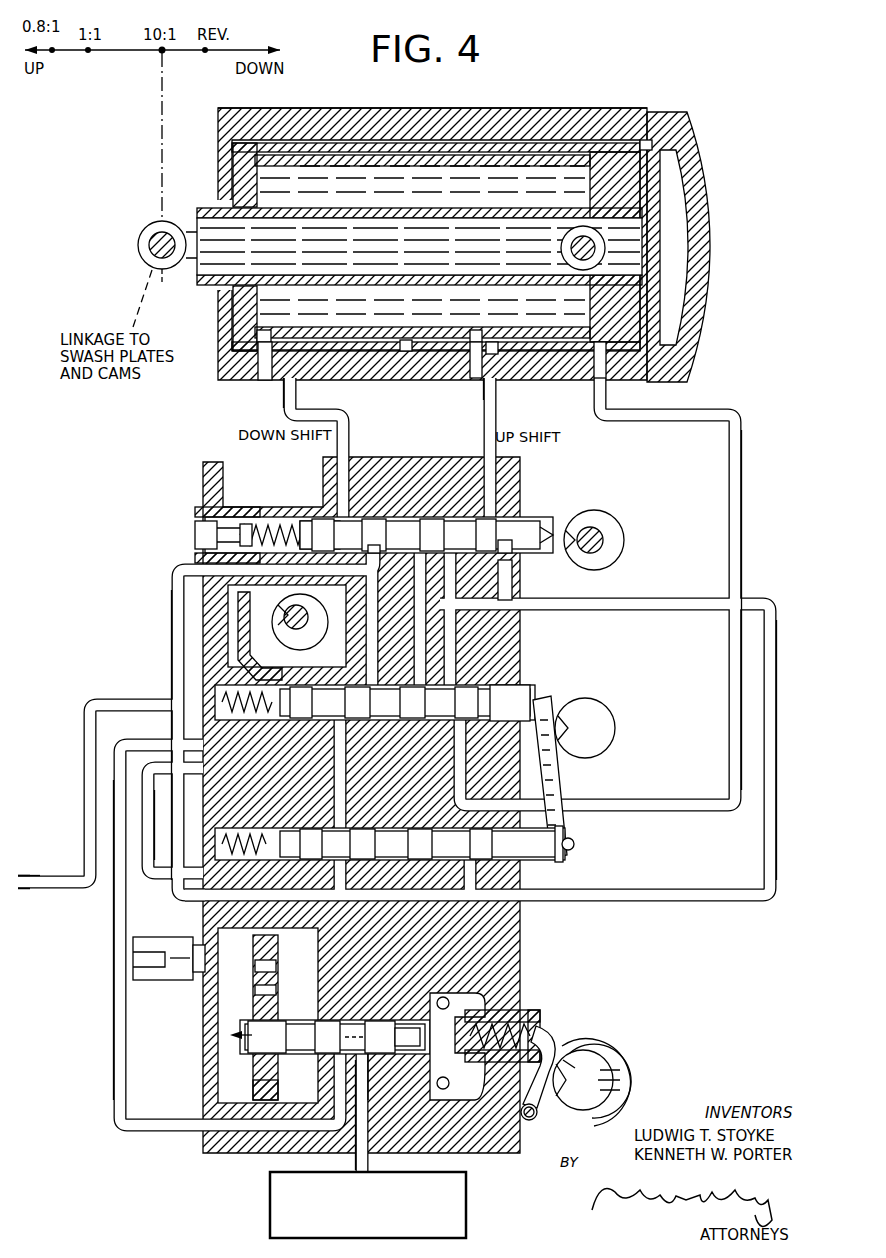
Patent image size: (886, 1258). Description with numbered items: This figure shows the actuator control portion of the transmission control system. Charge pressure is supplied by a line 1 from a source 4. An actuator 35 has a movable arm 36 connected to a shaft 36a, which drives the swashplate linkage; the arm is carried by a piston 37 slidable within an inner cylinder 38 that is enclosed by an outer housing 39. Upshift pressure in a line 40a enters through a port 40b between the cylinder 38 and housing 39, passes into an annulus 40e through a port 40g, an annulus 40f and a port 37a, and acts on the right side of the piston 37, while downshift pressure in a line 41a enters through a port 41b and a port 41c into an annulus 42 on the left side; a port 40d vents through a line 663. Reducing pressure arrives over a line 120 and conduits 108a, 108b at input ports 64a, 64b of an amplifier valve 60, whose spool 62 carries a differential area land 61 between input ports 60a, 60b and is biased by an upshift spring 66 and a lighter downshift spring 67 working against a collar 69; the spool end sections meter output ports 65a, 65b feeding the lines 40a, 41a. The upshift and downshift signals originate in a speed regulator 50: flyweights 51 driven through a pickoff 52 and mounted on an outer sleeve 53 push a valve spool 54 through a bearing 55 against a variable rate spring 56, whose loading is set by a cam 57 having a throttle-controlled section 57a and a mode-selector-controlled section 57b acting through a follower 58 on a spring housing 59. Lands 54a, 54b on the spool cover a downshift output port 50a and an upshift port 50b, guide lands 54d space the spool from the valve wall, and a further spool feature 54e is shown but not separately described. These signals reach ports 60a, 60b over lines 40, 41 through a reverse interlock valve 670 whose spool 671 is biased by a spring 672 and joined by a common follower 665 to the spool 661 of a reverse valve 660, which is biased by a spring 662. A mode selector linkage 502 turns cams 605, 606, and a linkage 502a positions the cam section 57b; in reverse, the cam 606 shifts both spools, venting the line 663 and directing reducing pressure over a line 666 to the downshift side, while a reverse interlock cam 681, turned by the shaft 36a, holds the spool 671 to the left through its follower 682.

The charge pressure line 1 is at (372, 1132).
The charge pressure source 4 is at (466, 1212).
The actuator 35 is at (463, 128).
The movable arm 36 is at (418, 256).
The shaft 36a is at (150, 244).
The piston 37 is at (580, 292).
The port 37a is at (592, 382).
The inner cylinder 38 is at (398, 152).
The outer housing 39 is at (555, 148).
The upshift signal line 40 is at (470, 660).
The upshift line 40a is at (492, 400).
The port 40b is at (472, 376).
The port 40d is at (656, 136).
The annulus 40e is at (494, 362).
The annulus 40f is at (470, 150).
The port 40g is at (478, 338).
The downshift signal line 41 is at (366, 658).
The downshift line 41a is at (296, 397).
The port 41b is at (268, 380).
The port 41c is at (263, 338).
The annulus 42 is at (318, 182).
The speed regulator 50 is at (299, 1041).
The downshift output port 50a is at (338, 1080).
The upshift port 50b is at (400, 1020).
The flyweights 51 is at (482, 1009).
The pickoff 52 is at (258, 956).
The outer sleeve 53 is at (380, 1100).
The valve spool 54 is at (355, 1049).
The land 54a is at (300, 1020).
The land 54b is at (380, 1020).
The guide lands 54d is at (322, 1021).
The passage 54e is at (375, 1021).
The bearing 55 is at (479, 1035).
The variable rate spring 56 is at (541, 1040).
The cam 57 is at (665, 1065).
The cam section 57a is at (618, 1077).
The cam section 57b is at (571, 1068).
The follower 58 is at (535, 1122).
The spring housing 59 is at (538, 1028).
The amplifier valve 60 is at (355, 546).
The input port 60a is at (505, 620).
The input port 60b is at (405, 525).
The differential area land 61 is at (418, 524).
The amplifier valve spool 62 is at (366, 526).
The input port 64a is at (500, 556).
The input port 64b is at (378, 558).
The output port 65a is at (500, 516).
The output port 65b is at (338, 516).
The upshift spring 66 is at (265, 521).
The downshift spring 67 is at (198, 528).
The collar 69 is at (262, 516).
The conduit 108a is at (641, 606).
The conduit 108b is at (178, 582).
The line 120 is at (80, 872).
The linkage 502 is at (606, 528).
The linkage 502a is at (606, 1066).
The cam 605 is at (650, 780).
The cam 606 is at (622, 722).
The reverse valve 660 is at (413, 840).
The reverse valve spool 661 is at (420, 840).
The spring 662 is at (248, 830).
The line 663 is at (716, 420).
The common follower 665 is at (549, 781).
The line 666 is at (335, 800).
The reverse interlock valve 670 is at (348, 683).
The reverse interlock valve spool 671 is at (410, 688).
The spring 672 is at (218, 688).
The reverse interlock cam 681 is at (276, 614).
The follower 682 is at (238, 630).